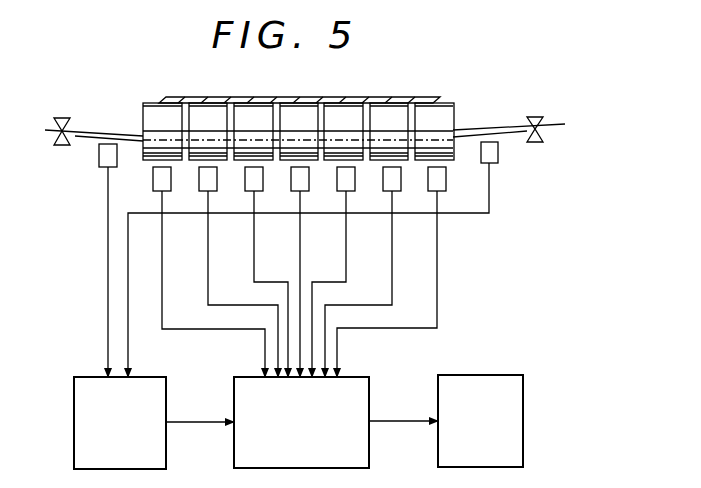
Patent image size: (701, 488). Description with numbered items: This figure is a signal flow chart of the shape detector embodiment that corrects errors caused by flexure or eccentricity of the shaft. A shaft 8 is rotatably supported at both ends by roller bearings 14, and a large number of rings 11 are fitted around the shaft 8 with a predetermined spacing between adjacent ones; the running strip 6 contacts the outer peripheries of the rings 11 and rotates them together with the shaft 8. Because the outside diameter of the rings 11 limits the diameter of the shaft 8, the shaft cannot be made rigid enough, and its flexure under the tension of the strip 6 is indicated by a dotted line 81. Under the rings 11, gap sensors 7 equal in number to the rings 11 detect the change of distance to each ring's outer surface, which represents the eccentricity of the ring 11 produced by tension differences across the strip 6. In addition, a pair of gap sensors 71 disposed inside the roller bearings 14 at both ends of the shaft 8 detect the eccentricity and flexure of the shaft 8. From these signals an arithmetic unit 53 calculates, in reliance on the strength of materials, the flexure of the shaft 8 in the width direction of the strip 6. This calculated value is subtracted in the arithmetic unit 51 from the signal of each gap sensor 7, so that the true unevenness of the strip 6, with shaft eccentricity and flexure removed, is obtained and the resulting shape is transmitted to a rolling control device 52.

The running strip 6 is at (334, 100).
The gap sensor 7 is at (437, 179).
The shaft 8 is at (466, 128).
The dotted line 81 is at (490, 132).
The ring 11 is at (441, 110).
The roller bearing 14 is at (63, 117).
The arithmetic unit 51 is at (360, 452).
The rolling control device 52 is at (515, 452).
The arithmetic unit 53 is at (160, 458).
The gap sensor 71 is at (99, 153).